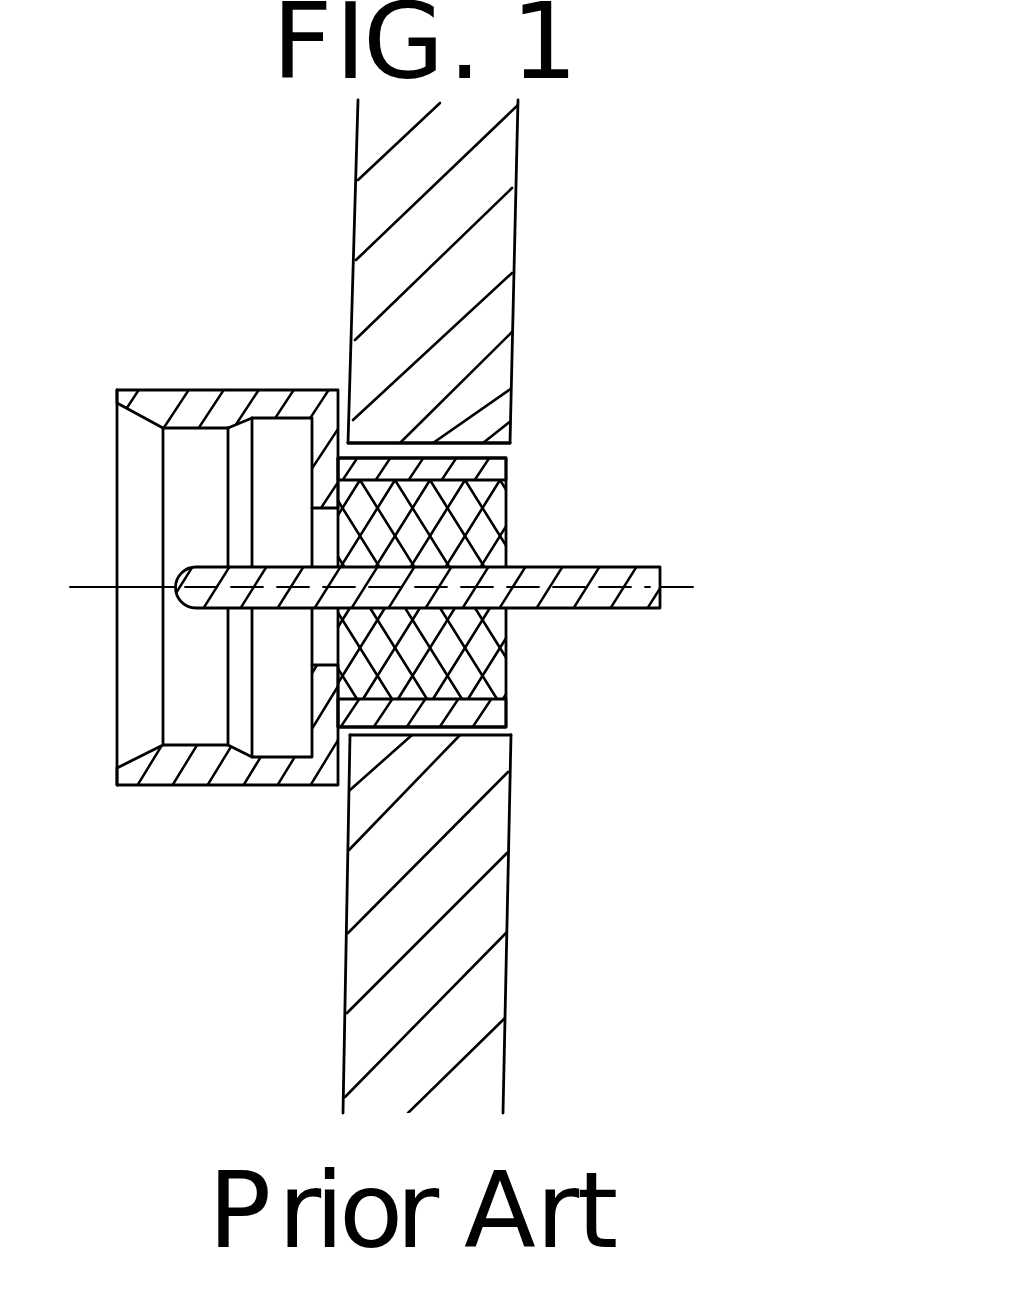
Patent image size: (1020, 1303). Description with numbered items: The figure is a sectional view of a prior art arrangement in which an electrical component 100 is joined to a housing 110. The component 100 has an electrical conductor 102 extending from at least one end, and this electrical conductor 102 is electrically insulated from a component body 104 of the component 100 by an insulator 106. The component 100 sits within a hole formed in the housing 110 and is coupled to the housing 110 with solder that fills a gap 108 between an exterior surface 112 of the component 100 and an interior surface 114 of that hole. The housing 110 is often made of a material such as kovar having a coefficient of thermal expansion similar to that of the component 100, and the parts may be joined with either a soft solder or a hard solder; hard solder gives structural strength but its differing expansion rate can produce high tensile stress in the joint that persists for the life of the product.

The electrical component 100 is at (184, 315).
The electrical conductor 102 is at (584, 564).
The component body 104 is at (508, 716).
The insulator 106 is at (506, 511).
The gap 108 is at (404, 448).
The housing 110 is at (481, 254).
The exterior surface 112 is at (474, 452).
The interior surface 114 is at (424, 439).